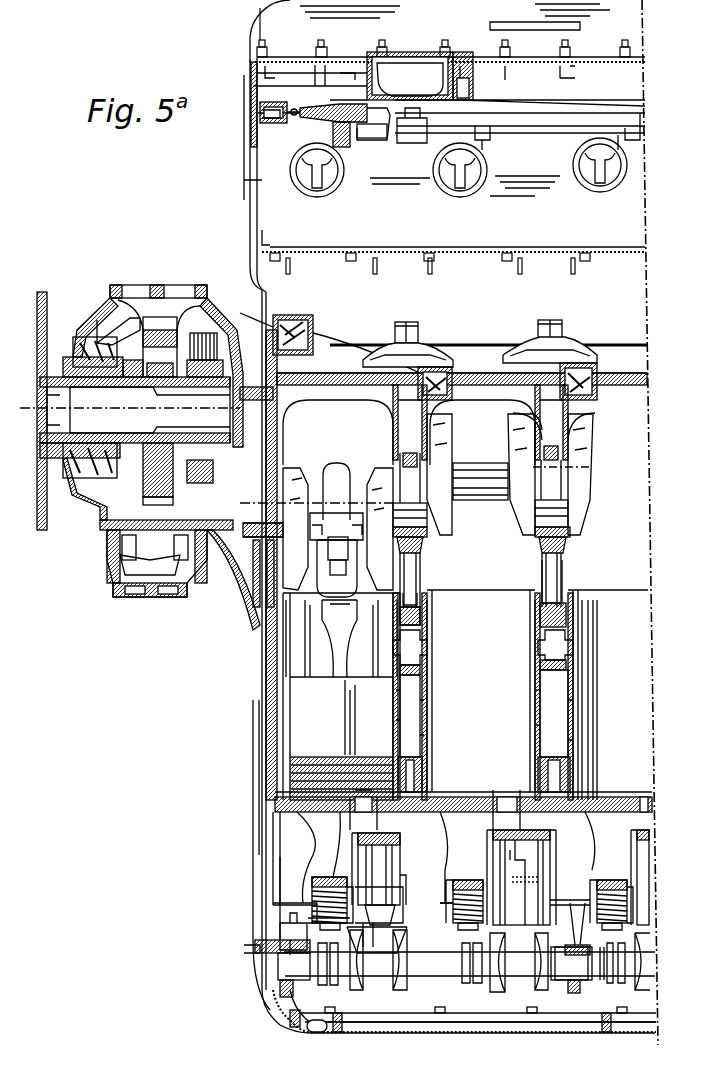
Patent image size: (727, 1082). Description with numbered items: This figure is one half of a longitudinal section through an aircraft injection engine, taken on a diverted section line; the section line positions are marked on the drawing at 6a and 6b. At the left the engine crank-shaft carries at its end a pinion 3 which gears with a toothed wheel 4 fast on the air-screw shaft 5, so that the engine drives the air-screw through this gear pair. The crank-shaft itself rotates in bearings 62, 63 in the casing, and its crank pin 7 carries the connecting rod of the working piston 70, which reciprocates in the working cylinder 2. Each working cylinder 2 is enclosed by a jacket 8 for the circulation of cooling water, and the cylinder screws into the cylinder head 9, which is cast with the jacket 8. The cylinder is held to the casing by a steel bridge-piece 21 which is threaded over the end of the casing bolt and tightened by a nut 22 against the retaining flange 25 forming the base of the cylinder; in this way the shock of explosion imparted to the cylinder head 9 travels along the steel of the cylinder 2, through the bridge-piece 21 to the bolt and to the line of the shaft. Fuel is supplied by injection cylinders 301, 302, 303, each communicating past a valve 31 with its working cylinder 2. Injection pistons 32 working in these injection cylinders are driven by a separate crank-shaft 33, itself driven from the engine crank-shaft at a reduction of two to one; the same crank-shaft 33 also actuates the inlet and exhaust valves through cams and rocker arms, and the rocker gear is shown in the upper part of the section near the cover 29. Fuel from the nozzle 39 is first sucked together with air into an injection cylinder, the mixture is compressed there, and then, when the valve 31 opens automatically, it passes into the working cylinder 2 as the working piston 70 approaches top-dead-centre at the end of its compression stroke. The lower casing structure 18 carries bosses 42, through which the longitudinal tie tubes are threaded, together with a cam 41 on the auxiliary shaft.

The pinion 3 is at (155, 553).
The toothed wheel 4 is at (152, 330).
The air-screw shaft 5 is at (45, 405).
The crank pin 7 is at (472, 478).
The jacket 8 is at (272, 738).
The cylinder head 9 is at (293, 810).
The crankcase floor 18 is at (282, 803).
The working cylinder 2 is at (341, 696).
The steel bridge-piece 21 is at (420, 355).
The nut 22 is at (410, 328).
The retaining flange 25 is at (490, 370).
The rocker bowl 29 is at (405, 68).
The valve 31 is at (365, 793).
The injection piston 32 is at (357, 855).
The crank-shaft 33 is at (490, 972).
The nozzle 39 is at (362, 122).
The cam 41 is at (618, 977).
The boss 42 is at (604, 977).
The bearing 62 is at (427, 548).
The bearing 63 is at (570, 547).
The working piston 70 is at (355, 757).
The injection cylinder 301 is at (387, 903).
The injection cylinder 302 is at (505, 842).
The injection cylinder 303 is at (650, 845).
The section line 6a is at (462, 280).
The section line 6b is at (163, 650).